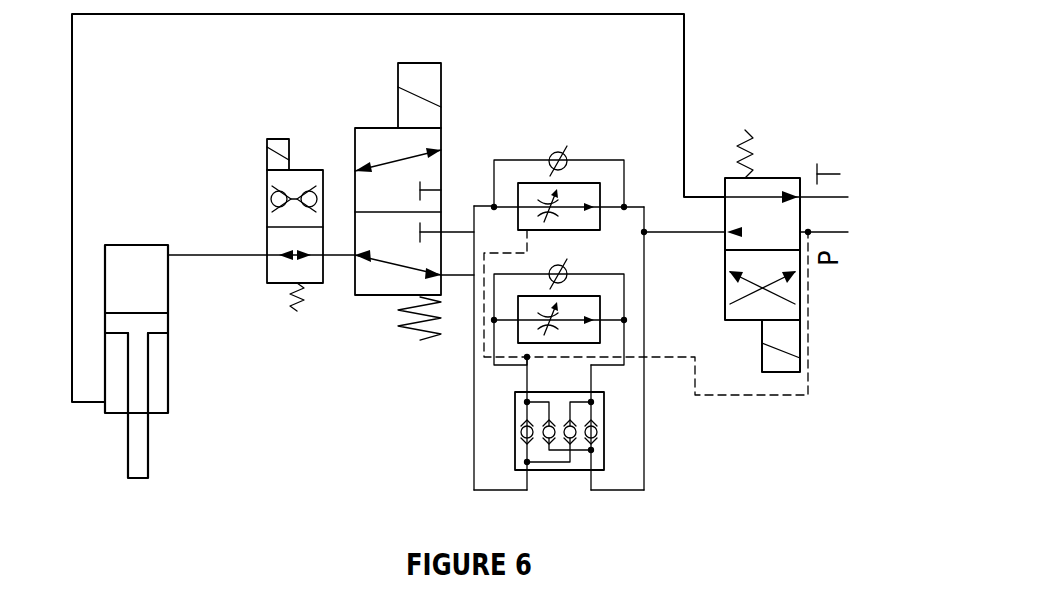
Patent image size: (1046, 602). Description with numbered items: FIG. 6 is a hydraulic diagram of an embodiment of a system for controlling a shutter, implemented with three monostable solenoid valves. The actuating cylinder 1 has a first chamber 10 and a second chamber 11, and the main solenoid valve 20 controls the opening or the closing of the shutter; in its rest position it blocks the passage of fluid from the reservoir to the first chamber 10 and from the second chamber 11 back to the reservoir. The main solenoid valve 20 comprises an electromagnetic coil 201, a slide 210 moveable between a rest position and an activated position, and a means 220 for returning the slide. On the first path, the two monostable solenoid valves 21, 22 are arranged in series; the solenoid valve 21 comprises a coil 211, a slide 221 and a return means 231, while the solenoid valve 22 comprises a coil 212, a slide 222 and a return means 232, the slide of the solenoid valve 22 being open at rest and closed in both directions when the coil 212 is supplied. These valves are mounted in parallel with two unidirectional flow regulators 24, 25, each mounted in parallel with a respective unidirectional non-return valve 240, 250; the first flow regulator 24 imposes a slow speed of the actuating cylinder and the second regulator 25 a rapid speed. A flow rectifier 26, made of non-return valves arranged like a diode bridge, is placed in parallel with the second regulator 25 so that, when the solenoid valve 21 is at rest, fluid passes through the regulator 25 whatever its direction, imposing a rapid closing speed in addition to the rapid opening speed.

The actuating cylinder 1 is at (82, 455).
The first chamber 10 is at (170, 285).
The second chamber 11 is at (162, 377).
The main solenoid valve 20 is at (798, 229).
The electromagnetic coil 201 is at (800, 343).
The slide 210 is at (800, 290).
The means for returning the slide 220 is at (745, 130).
The monostable solenoid valve 21 is at (416, 226).
The electromagnetic coil 211 is at (398, 98).
The slide 221 is at (442, 172).
The means for returning the slide 231 is at (425, 342).
The monostable solenoid valve 22 is at (270, 231).
The electromagnetic coil 212 is at (262, 156).
The slide 222 is at (265, 220).
The means for returning the slide 232 is at (297, 311).
The first unidirectional flow regulator 24 is at (580, 230).
The unidirectional non-return valve 240 is at (574, 150).
The second unidirectional flow regulator 25 is at (578, 343).
The unidirectional non-return valve 250 is at (578, 270).
The flow rectifier 26 is at (566, 488).